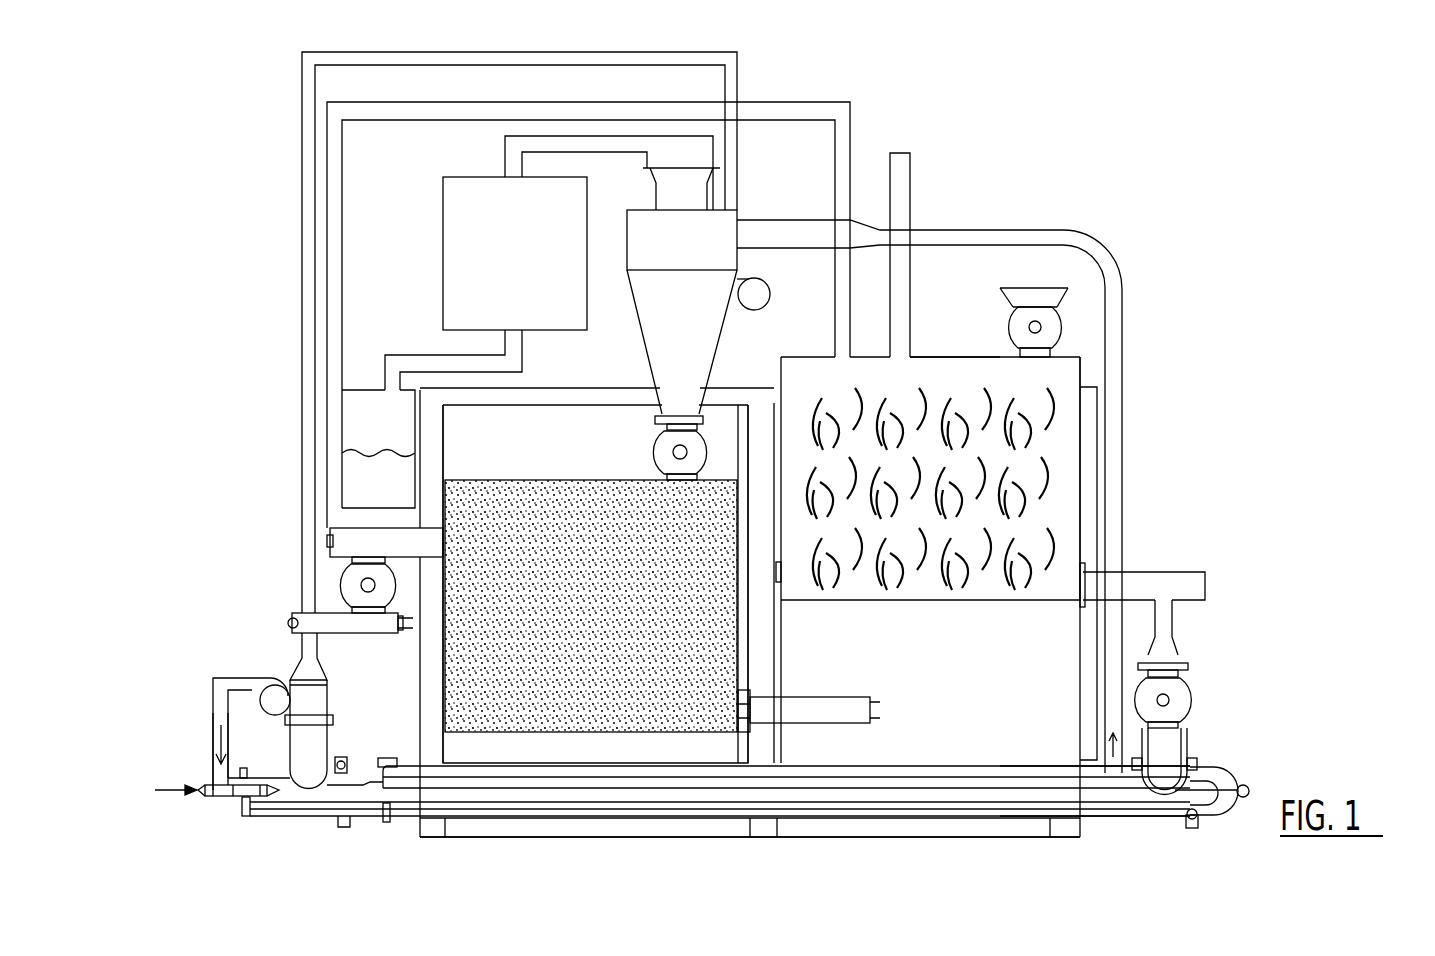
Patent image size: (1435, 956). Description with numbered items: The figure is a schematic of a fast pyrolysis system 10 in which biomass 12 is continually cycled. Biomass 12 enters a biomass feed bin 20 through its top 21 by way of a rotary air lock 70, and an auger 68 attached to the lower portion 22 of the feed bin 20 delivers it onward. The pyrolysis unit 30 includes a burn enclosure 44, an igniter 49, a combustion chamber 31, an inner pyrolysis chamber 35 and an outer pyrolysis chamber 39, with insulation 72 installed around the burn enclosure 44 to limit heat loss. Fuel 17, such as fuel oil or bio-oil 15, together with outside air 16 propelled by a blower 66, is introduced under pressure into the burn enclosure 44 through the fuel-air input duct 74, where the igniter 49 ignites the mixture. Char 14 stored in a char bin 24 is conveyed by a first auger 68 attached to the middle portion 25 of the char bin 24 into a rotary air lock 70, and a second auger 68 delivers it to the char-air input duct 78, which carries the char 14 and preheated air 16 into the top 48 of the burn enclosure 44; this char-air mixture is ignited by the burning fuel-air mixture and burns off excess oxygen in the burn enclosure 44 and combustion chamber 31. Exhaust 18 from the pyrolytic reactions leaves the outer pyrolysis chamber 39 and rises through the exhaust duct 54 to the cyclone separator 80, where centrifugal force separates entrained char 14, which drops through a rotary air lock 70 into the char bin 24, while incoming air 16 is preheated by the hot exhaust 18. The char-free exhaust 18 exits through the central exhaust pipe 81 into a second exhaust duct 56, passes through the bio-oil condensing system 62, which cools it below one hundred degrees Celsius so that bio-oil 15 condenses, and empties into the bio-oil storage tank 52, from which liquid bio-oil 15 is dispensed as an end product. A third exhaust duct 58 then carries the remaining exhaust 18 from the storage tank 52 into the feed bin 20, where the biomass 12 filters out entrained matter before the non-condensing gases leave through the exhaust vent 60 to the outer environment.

The fast pyrolysis system 10 is at (1028, 158).
The biomass 12 is at (950, 600).
The char 14 is at (680, 672).
The bio-oil 15 is at (340, 456).
The outside air 16 is at (213, 733).
The fuel 17 is at (170, 795).
The exhaust 18 is at (1102, 722).
The biomass feed bin 20 is at (1067, 370).
The top 21 is at (943, 354).
The lower portion 22 is at (1105, 528).
The char bin 24 is at (507, 492).
The middle portion 25 is at (433, 637).
The pyrolysis unit 30 is at (482, 818).
The combustion chamber 31 is at (874, 769).
The inner pyrolysis chamber 35 is at (925, 782).
The outer pyrolysis chamber 39 is at (1015, 767).
The burn enclosure 44 is at (322, 797).
The top 48 is at (338, 757).
The igniter 49 is at (270, 798).
The bio-oil storage tank 52 is at (381, 431).
The exhaust duct 54 is at (1058, 229).
The second exhaust duct 56 is at (617, 153).
The third exhaust duct 58 is at (343, 178).
The exhaust vent 60 is at (912, 184).
The bio-oil condensing system 62 is at (526, 266).
The blower 66 is at (770, 295).
The auger 68 is at (345, 532).
The rotary air lock 70 is at (652, 452).
The insulation 72 is at (1228, 768).
The fuel-air input duct 74 is at (213, 722).
The char-air input duct 78 is at (740, 84).
The cyclone separator 80 is at (693, 338).
The central exhaust pipe 81 is at (681, 198).